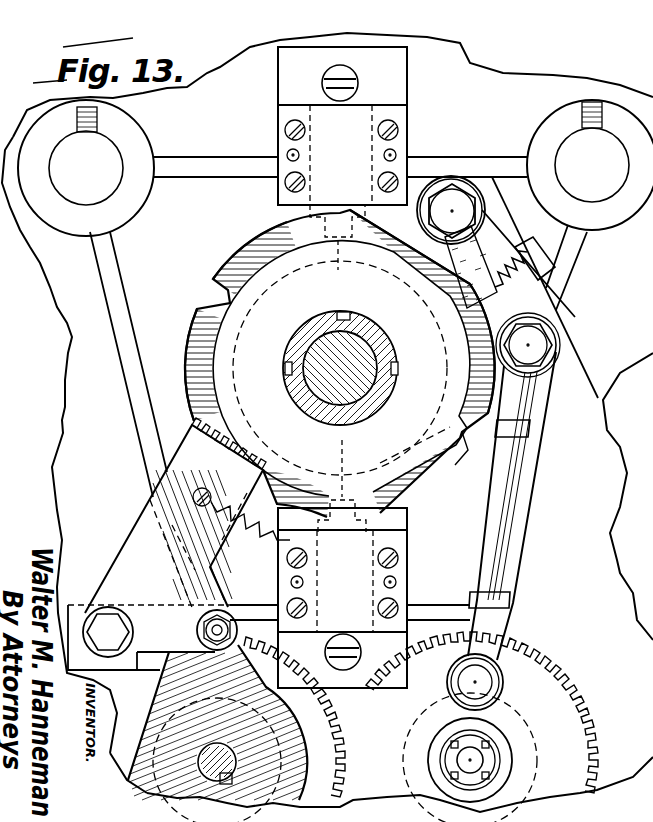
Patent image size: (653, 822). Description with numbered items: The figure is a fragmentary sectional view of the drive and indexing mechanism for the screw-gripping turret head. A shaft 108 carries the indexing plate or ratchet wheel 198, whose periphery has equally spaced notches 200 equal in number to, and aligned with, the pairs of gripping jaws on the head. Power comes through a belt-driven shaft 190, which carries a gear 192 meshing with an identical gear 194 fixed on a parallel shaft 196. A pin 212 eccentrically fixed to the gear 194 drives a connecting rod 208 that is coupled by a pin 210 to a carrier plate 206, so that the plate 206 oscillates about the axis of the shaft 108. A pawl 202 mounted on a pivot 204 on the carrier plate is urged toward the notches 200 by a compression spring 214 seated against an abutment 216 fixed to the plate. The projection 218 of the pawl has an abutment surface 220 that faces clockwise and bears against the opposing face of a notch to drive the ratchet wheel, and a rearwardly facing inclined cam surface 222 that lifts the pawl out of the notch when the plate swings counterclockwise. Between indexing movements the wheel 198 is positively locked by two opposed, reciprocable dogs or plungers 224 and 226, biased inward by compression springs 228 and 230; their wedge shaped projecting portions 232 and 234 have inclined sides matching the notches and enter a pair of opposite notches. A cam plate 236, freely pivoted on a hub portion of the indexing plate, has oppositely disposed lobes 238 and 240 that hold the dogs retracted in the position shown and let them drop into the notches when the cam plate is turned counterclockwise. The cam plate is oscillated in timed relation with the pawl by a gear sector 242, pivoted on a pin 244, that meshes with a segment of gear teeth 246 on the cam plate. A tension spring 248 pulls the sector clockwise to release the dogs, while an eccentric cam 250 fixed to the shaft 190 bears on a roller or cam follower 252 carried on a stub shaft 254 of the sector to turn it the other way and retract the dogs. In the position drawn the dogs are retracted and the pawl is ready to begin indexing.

The shaft 108 is at (467, 327).
The shaft 190 is at (223, 745).
The gear 192 is at (320, 780).
The gear 194 is at (527, 677).
The shaft 196 is at (473, 757).
The indexing plate or ratchet wheel 198 is at (463, 466).
The peripheral notches 200 is at (565, 460).
The pawl 202 is at (480, 247).
The pivot 204 is at (455, 190).
The carrier plate 206 is at (563, 307).
The connecting rod 208 is at (520, 497).
The pin 210 is at (533, 337).
The pin 212 is at (477, 677).
The compression spring 214 is at (533, 290).
The abutment 216 is at (540, 258).
The projection 218 is at (457, 298).
The abutment surface 220 is at (458, 348).
The inclined cam surface 222 is at (453, 283).
The dog or plunger 224 is at (358, 147).
The dog or plunger 226 is at (380, 577).
The compression spring 228 is at (322, 86).
The compression spring 230 is at (347, 655).
The wedge shaped projecting portion 232 is at (278, 200).
The wedge shaped projecting portion 234 is at (375, 537).
The cam plate 236 is at (200, 314).
The lobe 238 is at (273, 233).
The lobe 240 is at (383, 463).
The gear sector 242 is at (137, 530).
The pin 244 is at (80, 583).
The segment of gear teeth 246 is at (185, 362).
The tension spring 248 is at (288, 556).
The eccentric cam 250 is at (130, 783).
The roller or cam follower 252 is at (256, 618).
The pin or stub shaft 254 is at (110, 628).